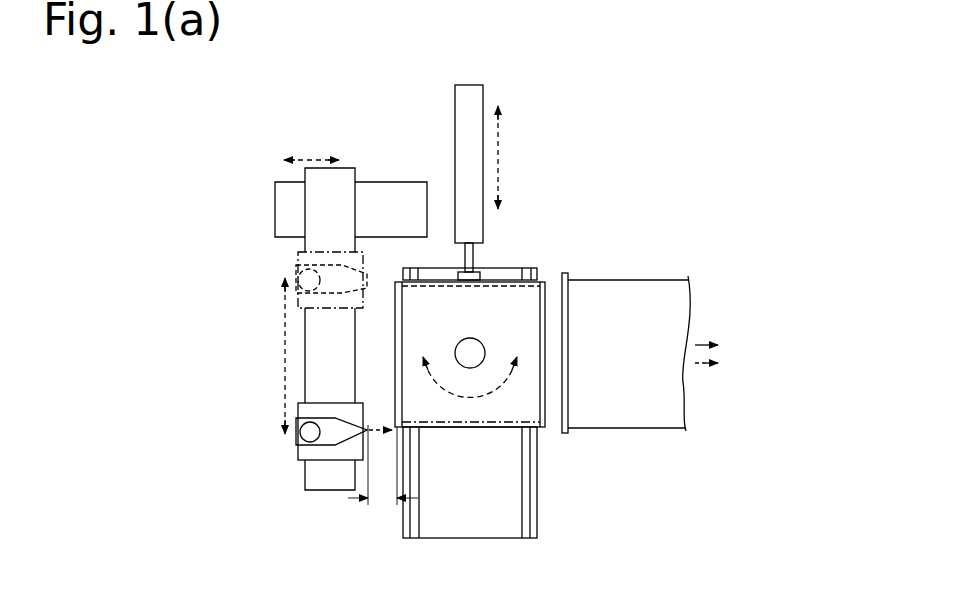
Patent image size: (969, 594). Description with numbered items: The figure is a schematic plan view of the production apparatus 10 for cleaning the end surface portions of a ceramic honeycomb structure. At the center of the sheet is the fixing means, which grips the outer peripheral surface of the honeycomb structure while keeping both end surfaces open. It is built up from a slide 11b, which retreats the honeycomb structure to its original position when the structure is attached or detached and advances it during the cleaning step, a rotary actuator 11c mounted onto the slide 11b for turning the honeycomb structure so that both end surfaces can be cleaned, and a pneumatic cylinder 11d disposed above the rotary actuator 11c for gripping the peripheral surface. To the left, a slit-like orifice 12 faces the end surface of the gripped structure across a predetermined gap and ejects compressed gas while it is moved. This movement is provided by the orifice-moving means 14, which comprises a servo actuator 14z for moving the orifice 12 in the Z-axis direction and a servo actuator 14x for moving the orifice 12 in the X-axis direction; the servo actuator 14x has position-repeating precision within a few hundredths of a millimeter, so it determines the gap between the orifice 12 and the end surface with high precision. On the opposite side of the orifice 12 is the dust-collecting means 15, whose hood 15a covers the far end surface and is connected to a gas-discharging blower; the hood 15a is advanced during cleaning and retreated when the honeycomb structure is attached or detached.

The production apparatus 10 is at (226, 129).
The slide 11b is at (500, 275).
The rotary actuator 11c is at (500, 386).
The pneumatic cylinder 11d is at (477, 345).
The slit-like orifice 12 is at (372, 430).
The orifice-moving means 14 is at (212, 238).
The servo actuator 14x is at (303, 452).
The servo actuator 14z is at (283, 226).
The dust-collecting means 15 is at (650, 267).
The hood 15a is at (637, 426).